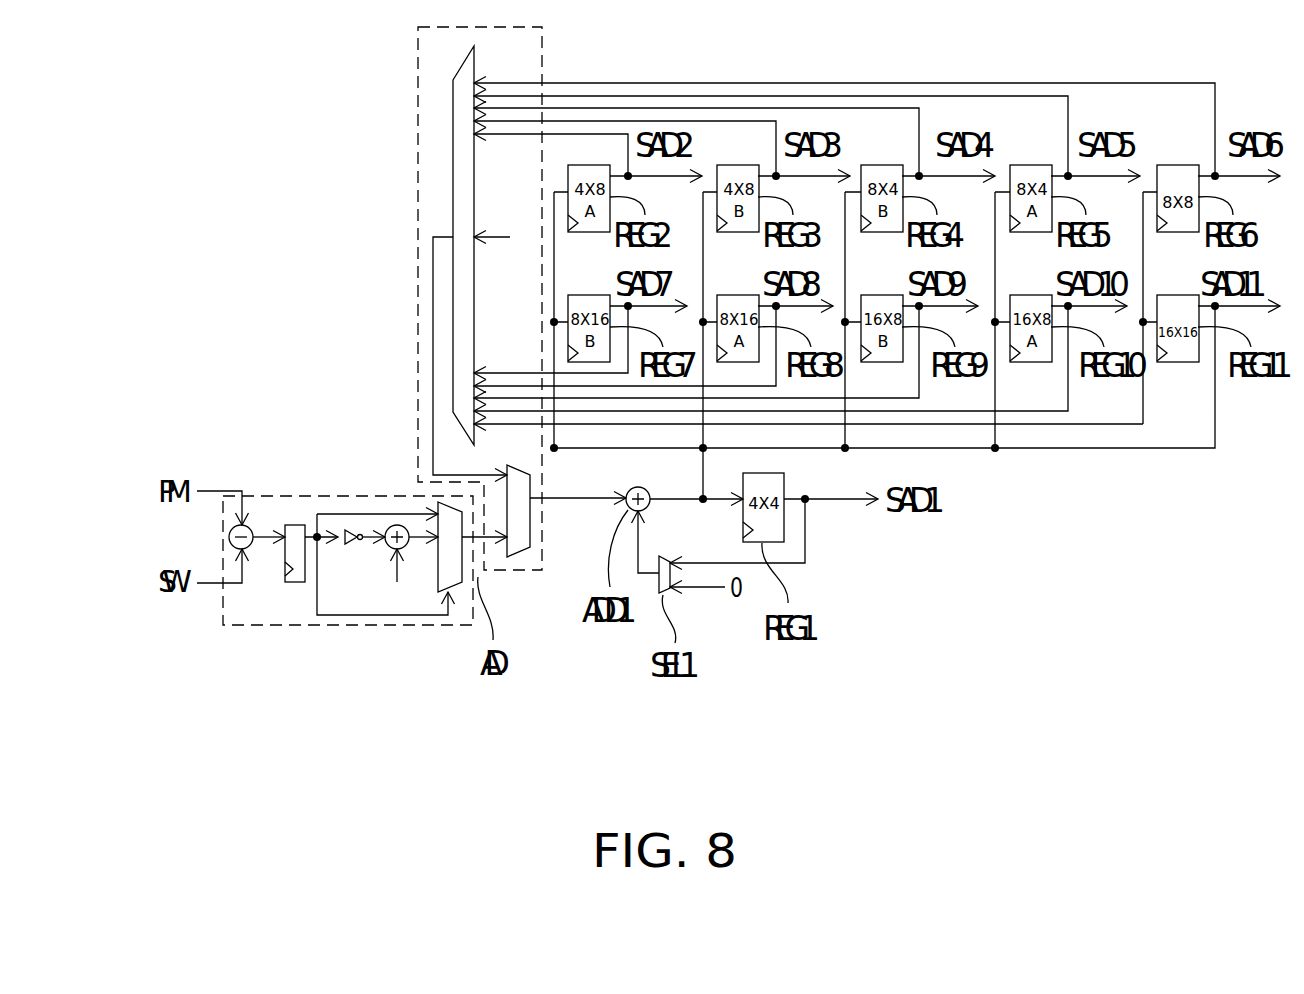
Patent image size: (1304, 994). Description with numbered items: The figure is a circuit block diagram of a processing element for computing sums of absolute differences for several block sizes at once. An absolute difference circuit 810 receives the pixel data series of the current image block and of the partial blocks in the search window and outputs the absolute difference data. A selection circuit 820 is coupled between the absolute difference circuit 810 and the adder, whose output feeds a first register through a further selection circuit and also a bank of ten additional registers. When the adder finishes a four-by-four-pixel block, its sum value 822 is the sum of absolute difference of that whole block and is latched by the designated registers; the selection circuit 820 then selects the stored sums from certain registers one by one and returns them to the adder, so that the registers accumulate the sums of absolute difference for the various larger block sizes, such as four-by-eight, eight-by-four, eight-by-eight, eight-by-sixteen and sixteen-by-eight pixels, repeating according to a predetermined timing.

The absolute difference circuit 810 is at (300, 627).
The selection circuit 820 is at (415, 453).
The sum value 822 is at (660, 503).